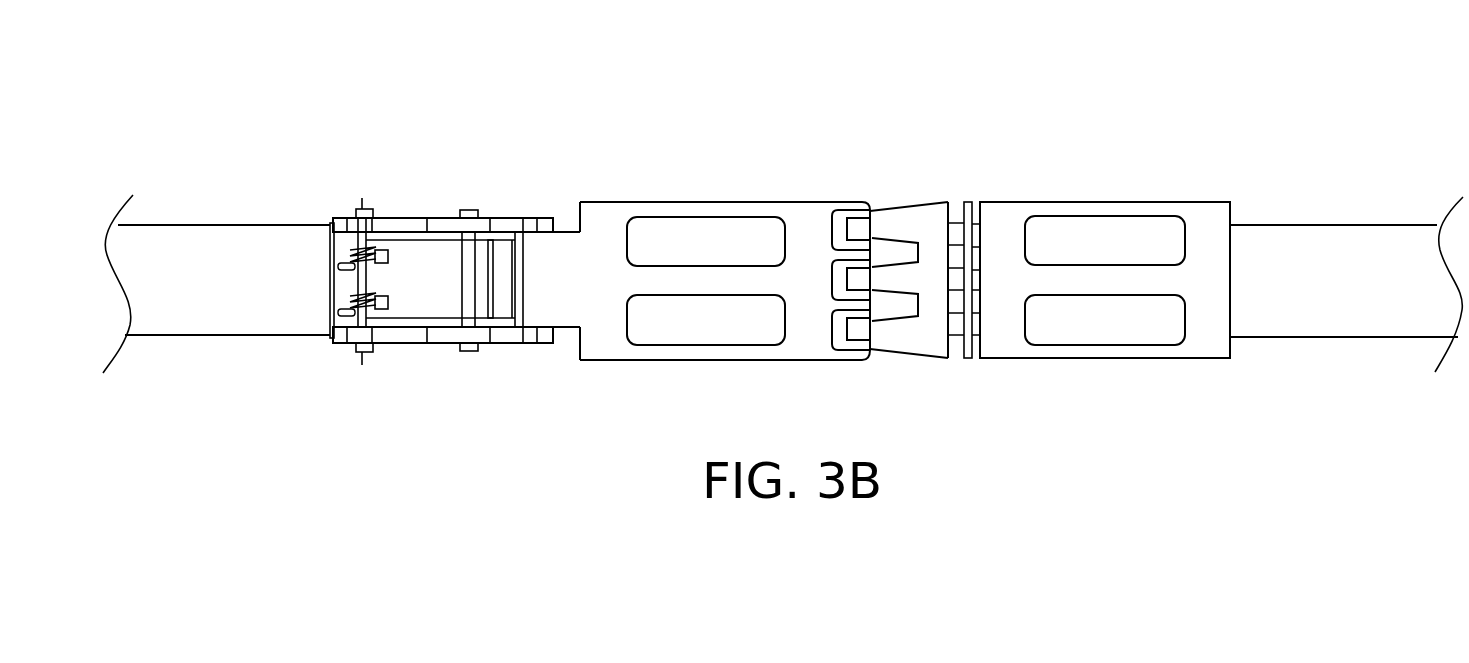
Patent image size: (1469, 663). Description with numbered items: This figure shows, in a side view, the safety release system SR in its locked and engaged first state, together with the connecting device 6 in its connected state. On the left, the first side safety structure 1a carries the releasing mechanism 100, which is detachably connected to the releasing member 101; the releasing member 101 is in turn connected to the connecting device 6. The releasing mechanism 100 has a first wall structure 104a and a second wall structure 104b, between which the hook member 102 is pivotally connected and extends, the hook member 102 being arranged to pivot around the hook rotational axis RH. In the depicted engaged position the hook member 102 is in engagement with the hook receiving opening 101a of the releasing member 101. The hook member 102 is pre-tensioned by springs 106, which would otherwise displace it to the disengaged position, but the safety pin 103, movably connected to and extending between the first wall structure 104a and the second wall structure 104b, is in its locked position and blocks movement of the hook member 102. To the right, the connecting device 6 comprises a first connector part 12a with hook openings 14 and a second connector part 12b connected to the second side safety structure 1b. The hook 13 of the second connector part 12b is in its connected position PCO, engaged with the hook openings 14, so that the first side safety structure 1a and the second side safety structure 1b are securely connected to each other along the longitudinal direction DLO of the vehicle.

The first side safety structure 1a is at (215, 303).
The second side safety structure 1b is at (1338, 303).
The connecting device 6 is at (905, 296).
The first connector part 12a is at (708, 210).
The second connector part 12b is at (1103, 212).
The hook 13 is at (910, 225).
The hook openings 14 is at (835, 213).
The releasing mechanism 100 is at (392, 292).
The releasing member 101 is at (563, 290).
The hook receiving opening 101a is at (513, 328).
The hook member 102 is at (437, 290).
The safety pin 103 is at (468, 275).
The first wall structure 104a is at (410, 332).
The second wall structure 104b is at (402, 230).
The springs 106 is at (348, 255).
The hook rotational axis RH is at (277, 375).
The safety release system SR is at (325, 130).
The connected position PCO is at (980, 93).
The longitudinal direction DLO is at (1377, 155).